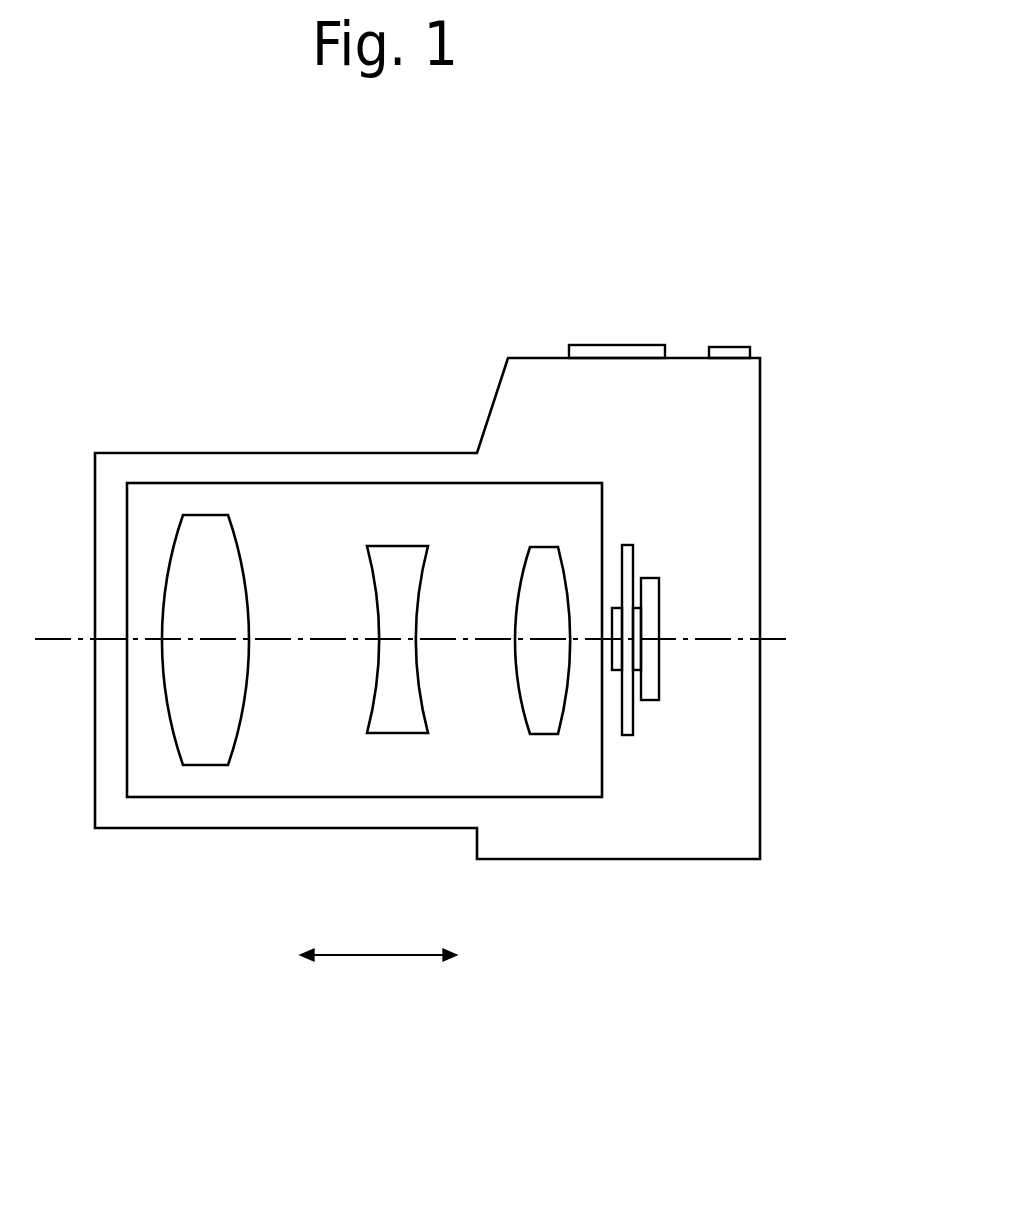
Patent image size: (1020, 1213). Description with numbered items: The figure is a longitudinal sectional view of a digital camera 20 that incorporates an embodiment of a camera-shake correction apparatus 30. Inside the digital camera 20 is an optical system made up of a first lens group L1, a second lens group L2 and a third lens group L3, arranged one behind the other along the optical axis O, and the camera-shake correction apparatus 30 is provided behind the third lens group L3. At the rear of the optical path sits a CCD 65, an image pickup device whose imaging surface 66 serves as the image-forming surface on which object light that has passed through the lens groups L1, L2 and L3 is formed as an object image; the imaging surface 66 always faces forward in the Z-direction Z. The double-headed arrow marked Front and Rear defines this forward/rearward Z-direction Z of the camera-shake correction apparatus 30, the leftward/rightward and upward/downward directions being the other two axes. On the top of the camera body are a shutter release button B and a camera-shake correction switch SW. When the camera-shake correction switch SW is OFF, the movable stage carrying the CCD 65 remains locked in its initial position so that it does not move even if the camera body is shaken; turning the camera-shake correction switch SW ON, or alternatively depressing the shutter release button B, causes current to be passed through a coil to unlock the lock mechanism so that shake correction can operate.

The digital camera 20 is at (808, 366).
The optical axis O is at (700, 639).
The first lens group L1 is at (207, 563).
The second lens group L2 is at (399, 575).
The third lens group L3 is at (547, 572).
The shutter release button B is at (597, 352).
The camera-shake correction switch SW is at (732, 347).
The camera-shake correction apparatus 30 is at (637, 530).
The CCD 65 is at (617, 665).
The imaging surface 66 is at (612, 651).
The Z-direction Z is at (376, 958).